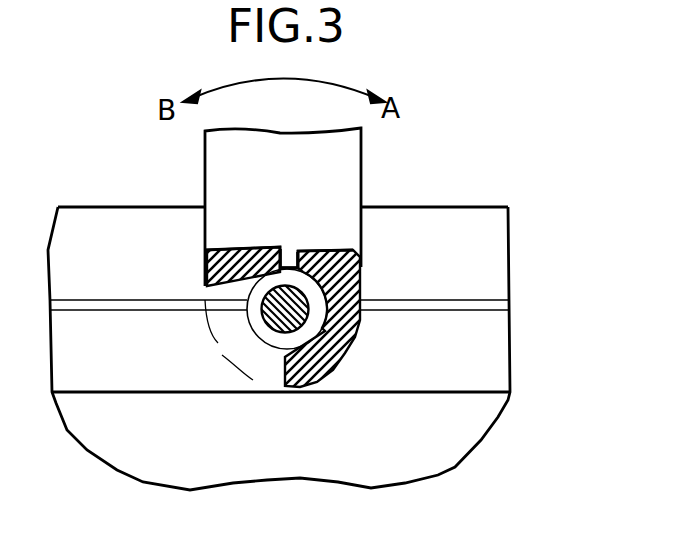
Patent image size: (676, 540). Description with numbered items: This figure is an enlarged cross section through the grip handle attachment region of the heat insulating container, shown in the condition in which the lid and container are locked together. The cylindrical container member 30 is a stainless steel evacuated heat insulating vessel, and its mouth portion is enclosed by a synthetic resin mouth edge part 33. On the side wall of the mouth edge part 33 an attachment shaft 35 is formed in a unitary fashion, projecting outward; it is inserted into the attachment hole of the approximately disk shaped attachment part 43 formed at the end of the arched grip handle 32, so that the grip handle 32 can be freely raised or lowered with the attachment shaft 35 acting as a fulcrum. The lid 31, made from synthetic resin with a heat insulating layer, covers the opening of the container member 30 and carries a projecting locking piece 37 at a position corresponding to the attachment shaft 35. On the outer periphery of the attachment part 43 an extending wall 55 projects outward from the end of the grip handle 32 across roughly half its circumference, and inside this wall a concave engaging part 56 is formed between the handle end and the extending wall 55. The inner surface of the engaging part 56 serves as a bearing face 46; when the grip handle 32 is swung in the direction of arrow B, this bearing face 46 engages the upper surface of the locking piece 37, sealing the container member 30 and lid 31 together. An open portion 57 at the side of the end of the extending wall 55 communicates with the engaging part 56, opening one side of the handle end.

The container member 30 is at (426, 450).
The lid 31 is at (445, 221).
The grip handle 32 is at (328, 176).
The mouth edge part 33 is at (475, 330).
The attachment shaft 35 is at (263, 322).
The locking piece 37 is at (292, 262).
The attachment part 43 is at (368, 283).
The bearing face 46 is at (318, 324).
The extending wall 55 is at (333, 328).
The engaging part 56 is at (250, 282).
The open portion 57 is at (226, 362).